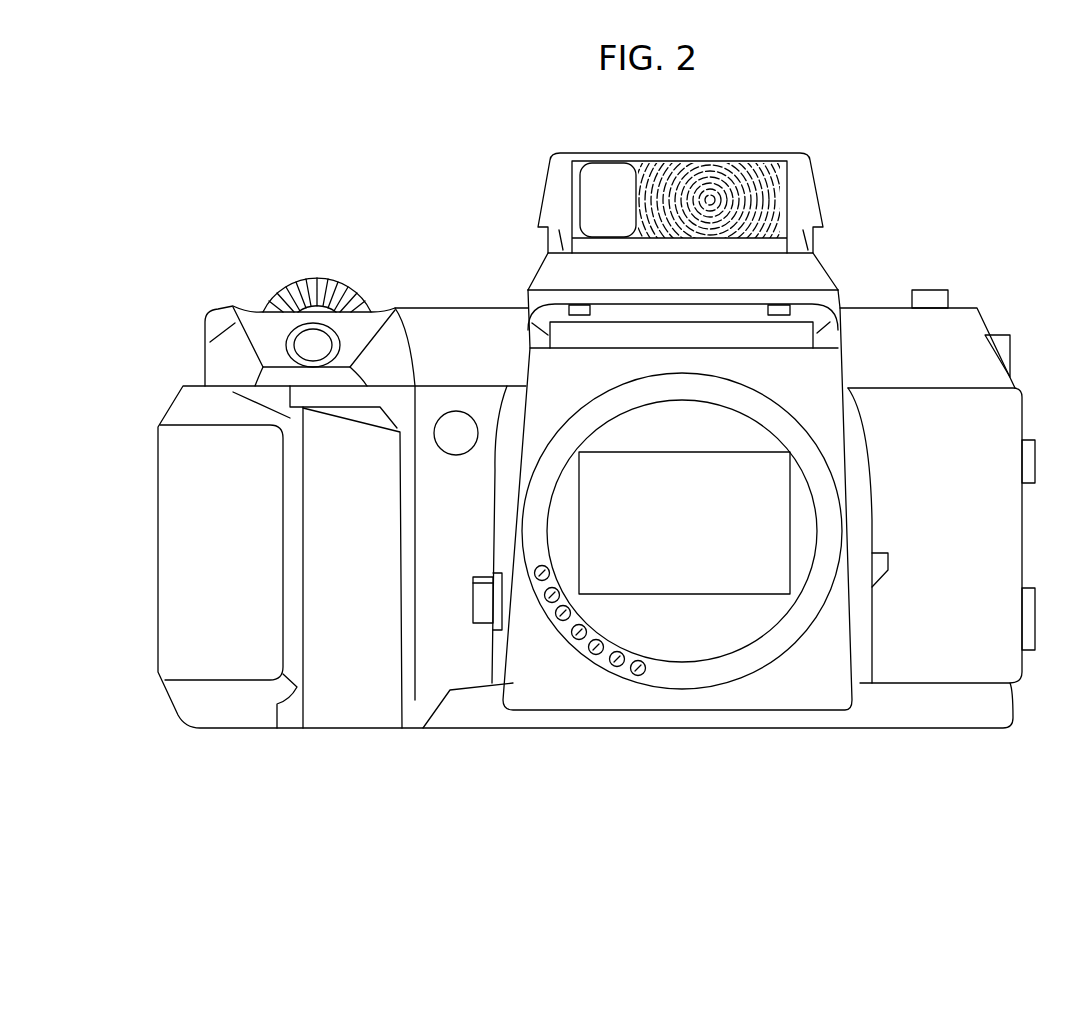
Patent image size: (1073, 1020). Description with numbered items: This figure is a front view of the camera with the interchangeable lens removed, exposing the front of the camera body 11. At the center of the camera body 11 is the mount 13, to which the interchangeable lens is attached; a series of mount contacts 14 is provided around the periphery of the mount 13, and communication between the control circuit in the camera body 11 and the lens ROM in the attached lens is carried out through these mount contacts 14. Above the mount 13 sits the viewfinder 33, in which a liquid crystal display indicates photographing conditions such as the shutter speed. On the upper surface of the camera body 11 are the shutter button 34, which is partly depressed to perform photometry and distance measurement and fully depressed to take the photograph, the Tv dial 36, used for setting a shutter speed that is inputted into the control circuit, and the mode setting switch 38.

The camera body 11 is at (977, 317).
The mount 13 is at (833, 532).
The mount contacts 14 is at (542, 573).
The viewfinder 33 is at (827, 273).
The shutter button 34 is at (300, 347).
The Tv dial 36 is at (320, 287).
The mode setting switch 38 is at (933, 290).